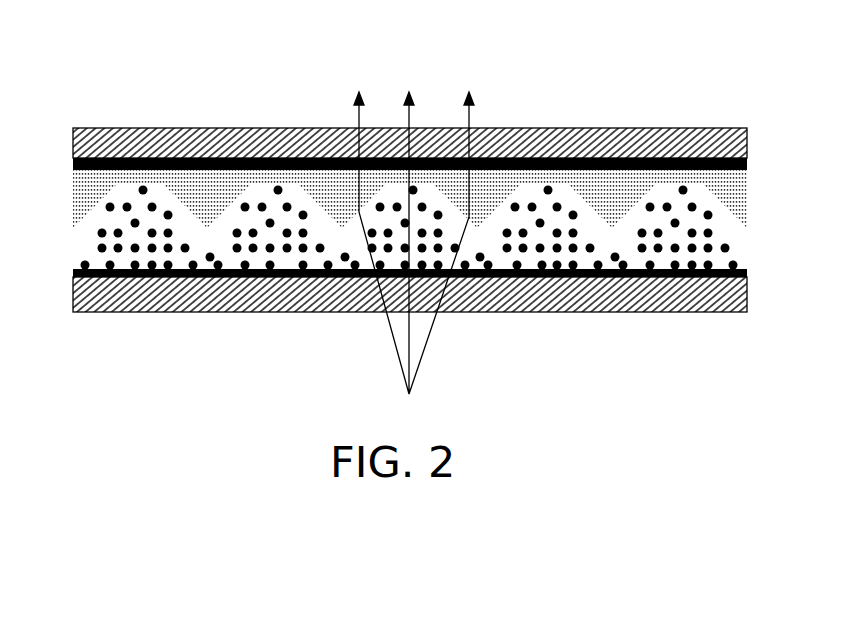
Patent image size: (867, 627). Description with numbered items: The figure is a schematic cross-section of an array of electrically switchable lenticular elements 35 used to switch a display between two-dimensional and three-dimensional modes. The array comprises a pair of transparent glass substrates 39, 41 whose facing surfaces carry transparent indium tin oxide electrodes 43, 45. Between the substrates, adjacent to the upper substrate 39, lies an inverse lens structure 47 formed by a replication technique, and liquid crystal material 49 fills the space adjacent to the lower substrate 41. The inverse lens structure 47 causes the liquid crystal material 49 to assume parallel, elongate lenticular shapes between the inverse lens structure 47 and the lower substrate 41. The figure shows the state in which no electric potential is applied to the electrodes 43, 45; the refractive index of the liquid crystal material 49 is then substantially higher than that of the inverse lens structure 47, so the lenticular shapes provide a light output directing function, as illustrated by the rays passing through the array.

The electrically switchable lenticular elements 35 is at (236, 193).
The upper transparent glass substrate 39 is at (77, 146).
The lower transparent glass substrate 41 is at (78, 295).
The transparent electrode 43 is at (744, 142).
The transparent electrode 45 is at (745, 271).
The inverse lens structure 47 is at (82, 189).
The liquid crystal material 49 is at (708, 246).